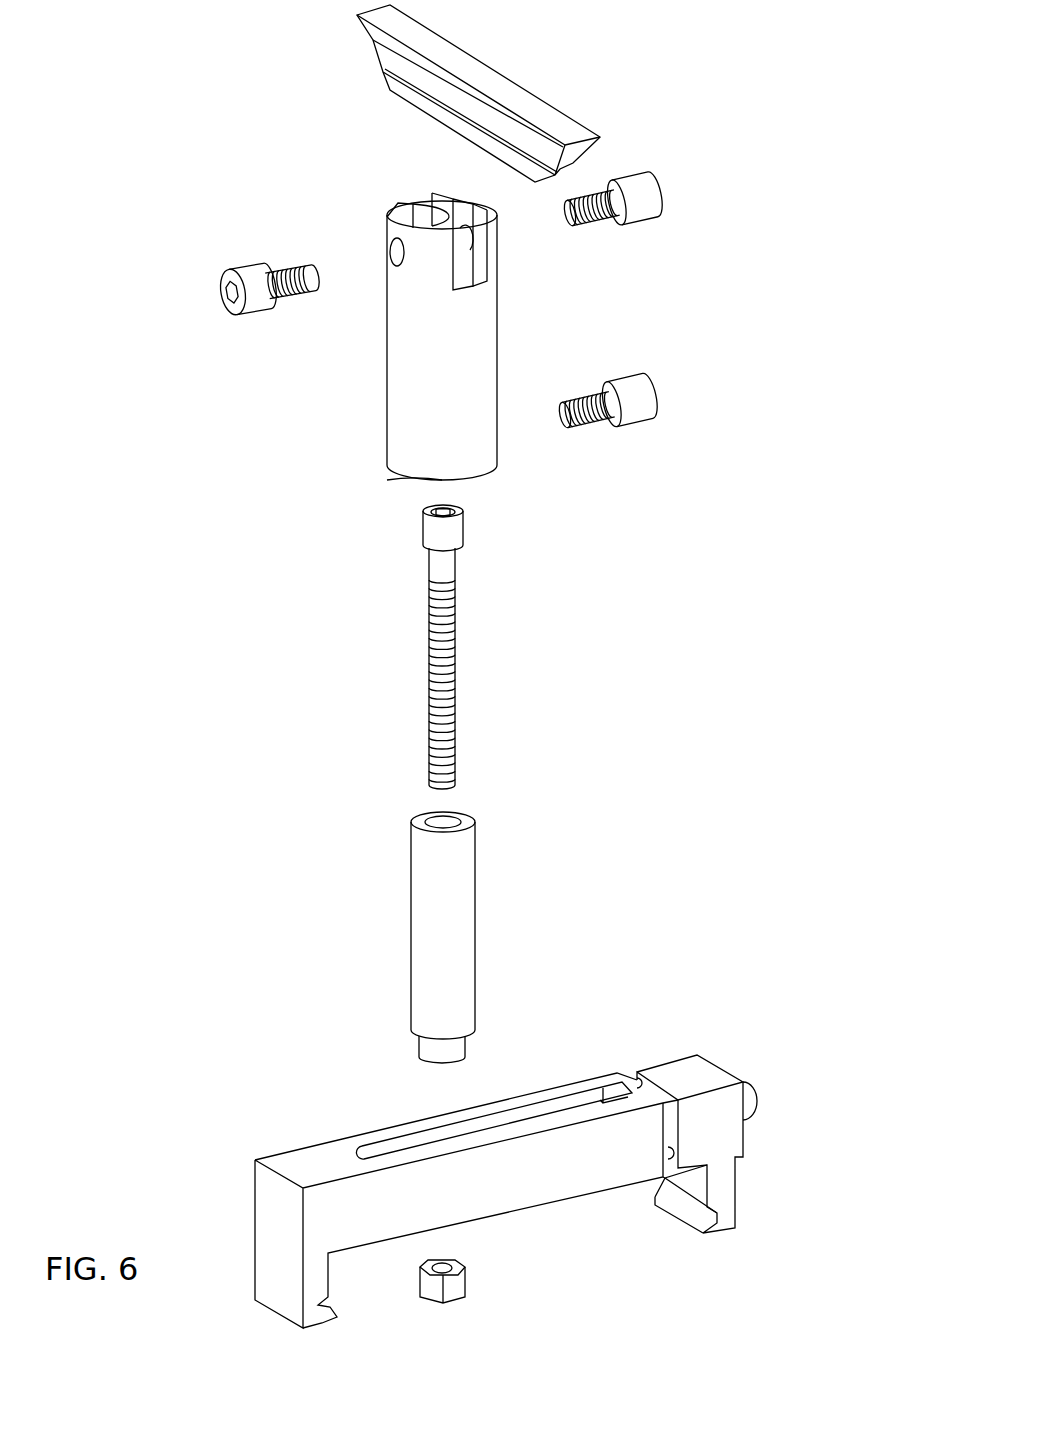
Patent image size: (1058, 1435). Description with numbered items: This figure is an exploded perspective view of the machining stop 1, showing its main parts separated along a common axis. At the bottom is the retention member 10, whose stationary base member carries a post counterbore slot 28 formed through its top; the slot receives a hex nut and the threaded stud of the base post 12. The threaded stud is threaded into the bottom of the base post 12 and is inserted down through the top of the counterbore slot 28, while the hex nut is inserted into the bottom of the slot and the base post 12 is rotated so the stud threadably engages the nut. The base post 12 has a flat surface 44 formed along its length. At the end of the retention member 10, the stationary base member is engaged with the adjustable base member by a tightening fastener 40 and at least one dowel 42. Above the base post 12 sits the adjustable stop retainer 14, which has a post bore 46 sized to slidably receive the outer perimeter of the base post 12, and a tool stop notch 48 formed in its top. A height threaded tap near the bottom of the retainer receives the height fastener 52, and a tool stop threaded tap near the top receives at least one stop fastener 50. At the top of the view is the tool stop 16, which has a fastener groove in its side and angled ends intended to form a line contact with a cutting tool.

The machining stop 1 is at (878, 108).
The retention member 10 is at (546, 1148).
The base post 12 is at (411, 960).
The adjustable stop retainer 14 is at (446, 344).
The tool stop 16 is at (560, 125).
The post counterbore slot 28 is at (555, 1115).
The tightening fastener 40 is at (758, 1094).
The dowel 42 is at (636, 1072).
The flat surface 44 is at (465, 815).
The post bore 46 is at (387, 217).
The tool stop notch 48 is at (423, 212).
The stop fastener 50 is at (225, 296).
The height fastener 52 is at (650, 390).